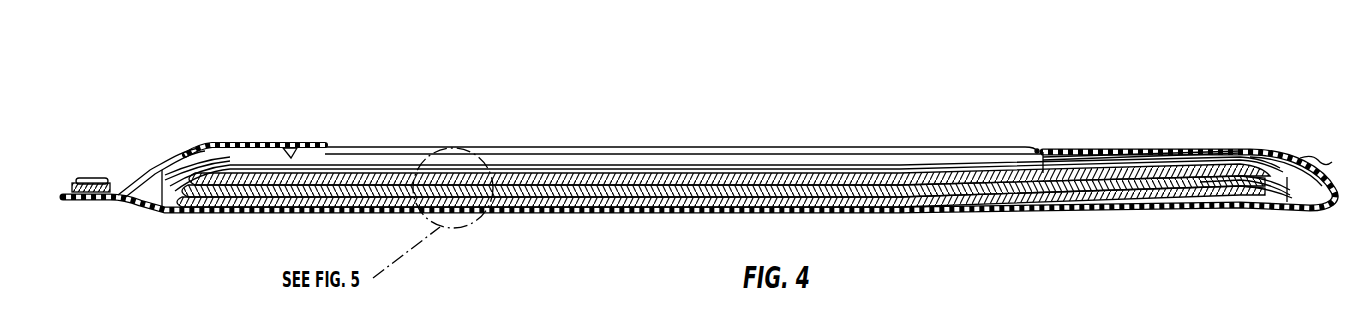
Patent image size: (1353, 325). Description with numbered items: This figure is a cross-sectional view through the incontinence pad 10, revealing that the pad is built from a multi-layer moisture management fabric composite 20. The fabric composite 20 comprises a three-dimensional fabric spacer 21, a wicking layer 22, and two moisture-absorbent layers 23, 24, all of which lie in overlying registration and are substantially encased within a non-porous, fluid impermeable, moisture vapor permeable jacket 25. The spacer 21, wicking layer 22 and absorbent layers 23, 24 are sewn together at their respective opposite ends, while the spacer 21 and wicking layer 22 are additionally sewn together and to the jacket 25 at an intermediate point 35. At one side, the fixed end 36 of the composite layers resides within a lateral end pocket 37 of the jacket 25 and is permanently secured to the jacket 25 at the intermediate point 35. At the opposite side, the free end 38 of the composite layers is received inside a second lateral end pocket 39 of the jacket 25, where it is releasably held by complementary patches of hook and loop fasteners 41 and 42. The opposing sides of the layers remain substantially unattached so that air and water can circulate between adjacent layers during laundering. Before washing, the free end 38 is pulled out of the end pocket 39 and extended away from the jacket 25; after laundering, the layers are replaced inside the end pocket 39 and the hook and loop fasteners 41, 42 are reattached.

The incontinence pad 10 is at (404, 100).
The fabric composite 20 is at (1343, 187).
The three-dimensional fabric spacer 21 is at (973, 157).
The wicking layer 22 is at (933, 175).
The moisture-absorbent layer 23 is at (850, 190).
The moisture-absorbent layer 24 is at (720, 195).
The jacket 25 is at (270, 142).
The intermediate point 35 is at (1083, 173).
The fixed end 36 is at (1197, 178).
The lateral end pocket 37 is at (1150, 152).
The free end 38 is at (215, 185).
The second lateral end pocket 39 is at (292, 150).
The hook and loop fastener 41 is at (221, 142).
The hook and loop fastener 42 is at (150, 168).